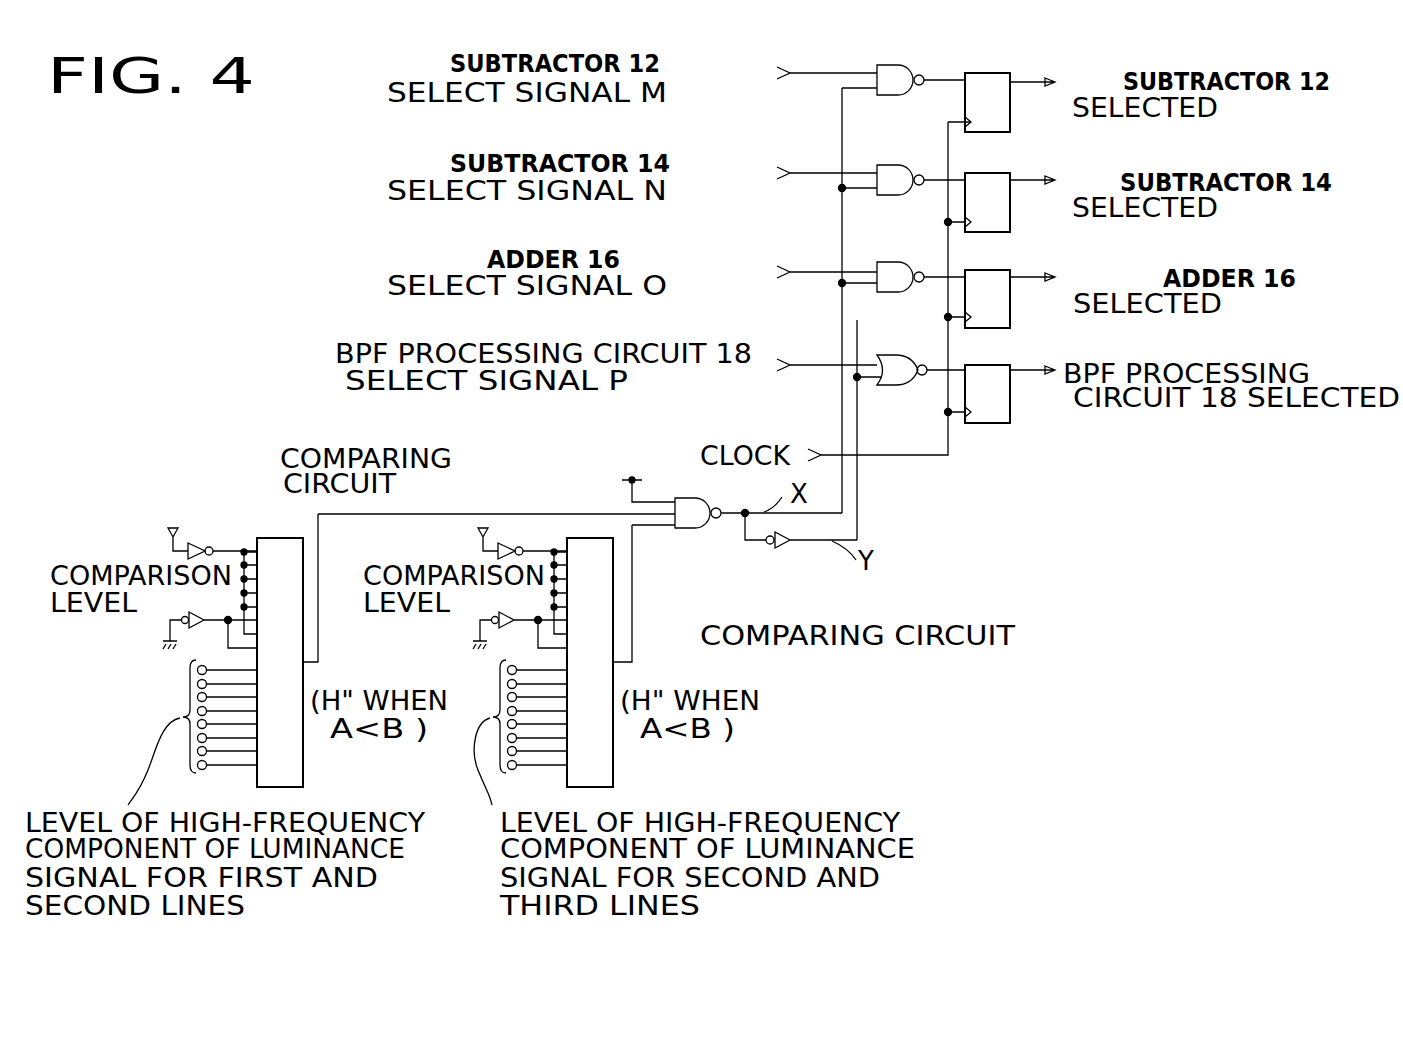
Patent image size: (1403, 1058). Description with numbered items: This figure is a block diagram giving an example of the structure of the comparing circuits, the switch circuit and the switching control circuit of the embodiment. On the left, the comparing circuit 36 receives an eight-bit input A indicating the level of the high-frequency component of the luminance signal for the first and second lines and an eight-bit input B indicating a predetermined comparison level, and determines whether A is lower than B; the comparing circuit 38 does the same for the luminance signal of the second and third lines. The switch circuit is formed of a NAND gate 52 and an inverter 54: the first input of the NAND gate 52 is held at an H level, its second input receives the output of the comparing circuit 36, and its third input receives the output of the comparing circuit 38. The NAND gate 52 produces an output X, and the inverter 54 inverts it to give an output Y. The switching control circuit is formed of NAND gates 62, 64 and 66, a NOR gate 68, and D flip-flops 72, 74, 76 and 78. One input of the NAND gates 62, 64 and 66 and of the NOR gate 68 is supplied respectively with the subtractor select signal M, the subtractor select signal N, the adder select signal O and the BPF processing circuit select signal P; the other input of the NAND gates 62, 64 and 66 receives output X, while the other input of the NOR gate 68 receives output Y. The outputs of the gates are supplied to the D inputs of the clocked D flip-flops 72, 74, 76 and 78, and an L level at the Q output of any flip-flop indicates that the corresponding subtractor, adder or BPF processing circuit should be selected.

The comparing circuit 36 is at (275, 538).
The comparing circuit 38 is at (613, 640).
The NAND gate 52 is at (681, 497).
The inverter 54 is at (784, 549).
The NAND gate 62 is at (899, 96).
The NAND gate 64 is at (899, 196).
The NAND gate 66 is at (899, 293).
The NOR gate 68 is at (899, 386).
The D flip-flop 72 is at (1011, 109).
The D flip-flop 74 is at (1011, 209).
The D flip-flop 76 is at (1011, 306).
The D flip-flop 78 is at (1011, 401).